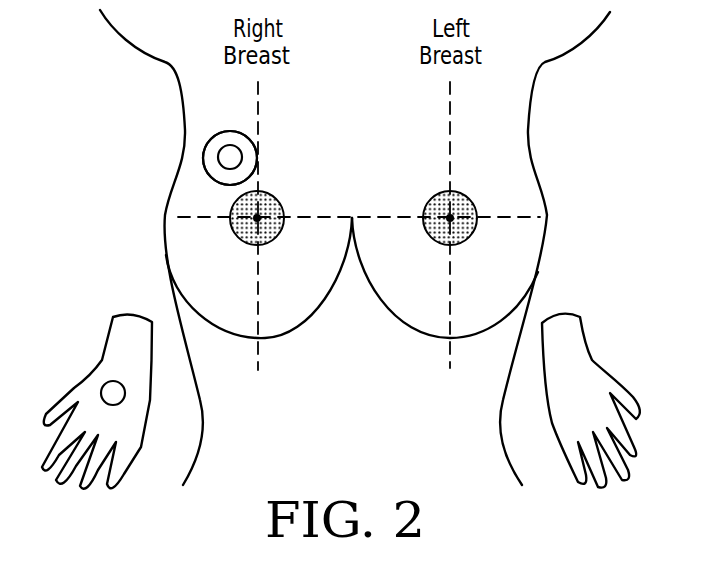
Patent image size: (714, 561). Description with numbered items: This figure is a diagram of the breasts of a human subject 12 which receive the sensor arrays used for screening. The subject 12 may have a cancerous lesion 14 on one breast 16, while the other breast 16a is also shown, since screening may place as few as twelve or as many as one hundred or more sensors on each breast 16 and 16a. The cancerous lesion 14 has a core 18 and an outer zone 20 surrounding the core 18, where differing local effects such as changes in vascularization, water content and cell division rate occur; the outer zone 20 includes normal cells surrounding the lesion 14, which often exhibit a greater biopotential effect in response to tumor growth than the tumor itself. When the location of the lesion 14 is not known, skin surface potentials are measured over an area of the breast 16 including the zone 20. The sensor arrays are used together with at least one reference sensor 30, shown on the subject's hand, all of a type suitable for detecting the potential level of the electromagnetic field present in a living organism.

The human subject 12 is at (533, 155).
The cancerous lesion 14 is at (242, 130).
The breast 16 is at (282, 302).
The breast 16a is at (418, 313).
The core 18 is at (233, 152).
The outer zone 20 is at (222, 178).
The reference sensor 30 is at (125, 393).